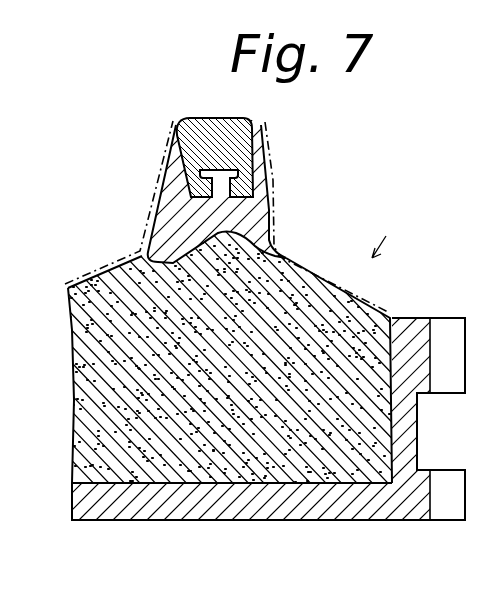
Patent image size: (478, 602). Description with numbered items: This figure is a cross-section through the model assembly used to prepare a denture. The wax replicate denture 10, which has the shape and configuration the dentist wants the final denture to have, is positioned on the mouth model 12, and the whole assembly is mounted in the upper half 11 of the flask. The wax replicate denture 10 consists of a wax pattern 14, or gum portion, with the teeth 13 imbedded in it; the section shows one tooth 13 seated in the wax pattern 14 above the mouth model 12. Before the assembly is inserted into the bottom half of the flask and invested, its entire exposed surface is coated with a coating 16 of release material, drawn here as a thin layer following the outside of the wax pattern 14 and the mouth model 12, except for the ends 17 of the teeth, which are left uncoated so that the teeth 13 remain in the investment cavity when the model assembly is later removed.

The wax replicate denture 10 is at (389, 234).
The upper half of the flask 11 is at (250, 520).
The mouth model 12 is at (332, 408).
The teeth 13 is at (240, 150).
The wax pattern 14 is at (270, 205).
The coating of release material 16 is at (162, 203).
The ends of the teeth 17 is at (214, 117).